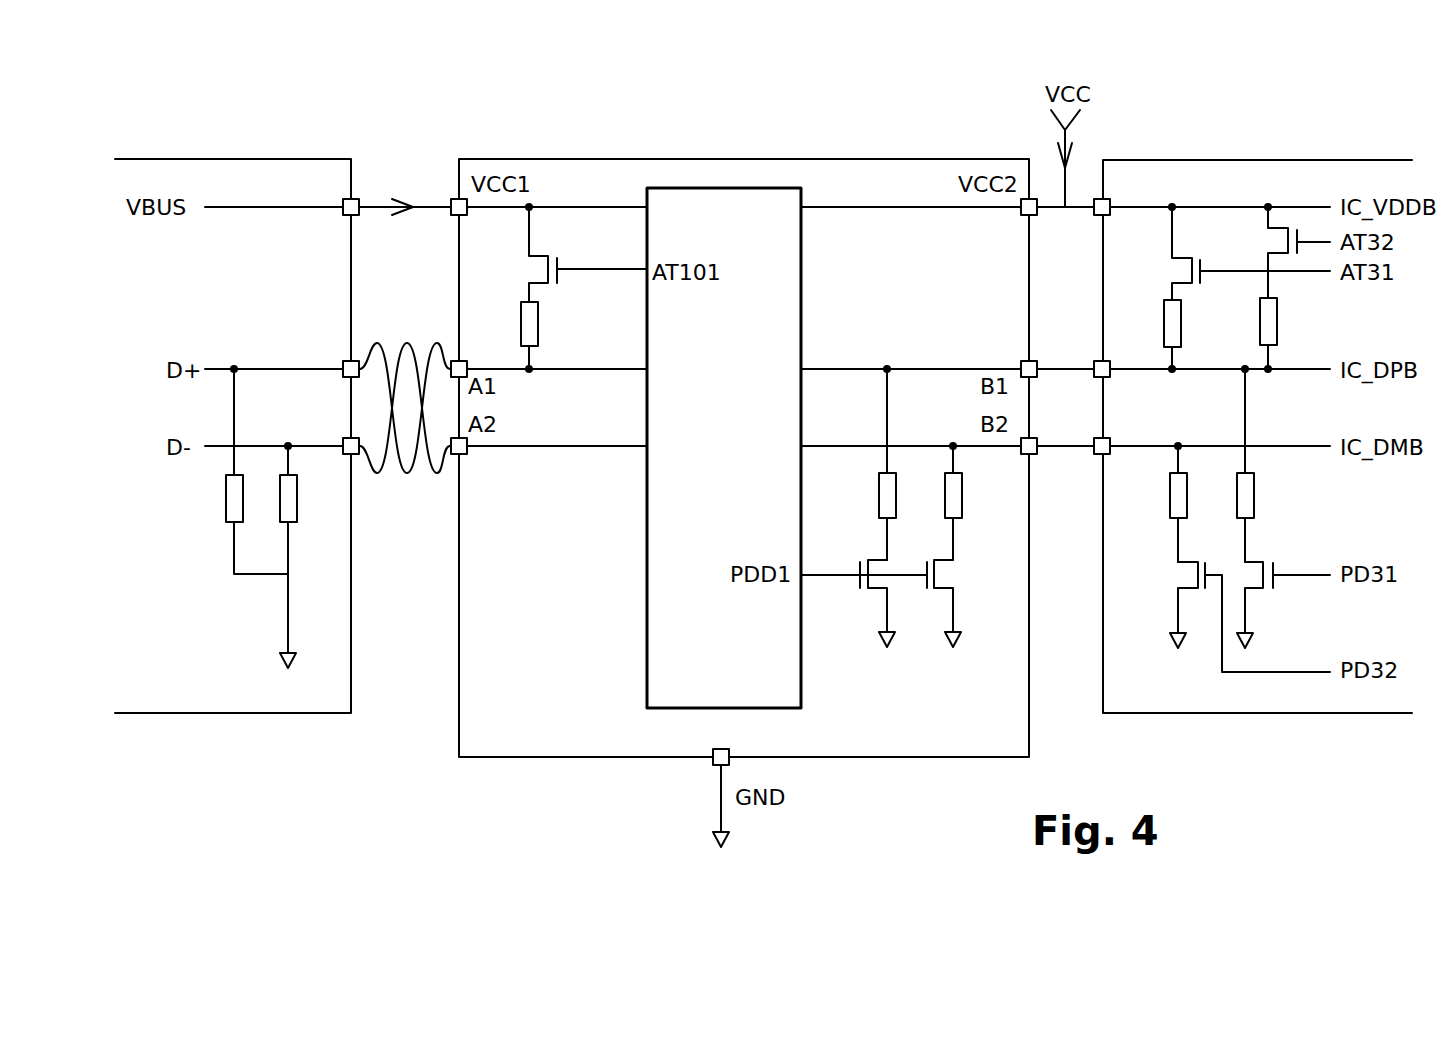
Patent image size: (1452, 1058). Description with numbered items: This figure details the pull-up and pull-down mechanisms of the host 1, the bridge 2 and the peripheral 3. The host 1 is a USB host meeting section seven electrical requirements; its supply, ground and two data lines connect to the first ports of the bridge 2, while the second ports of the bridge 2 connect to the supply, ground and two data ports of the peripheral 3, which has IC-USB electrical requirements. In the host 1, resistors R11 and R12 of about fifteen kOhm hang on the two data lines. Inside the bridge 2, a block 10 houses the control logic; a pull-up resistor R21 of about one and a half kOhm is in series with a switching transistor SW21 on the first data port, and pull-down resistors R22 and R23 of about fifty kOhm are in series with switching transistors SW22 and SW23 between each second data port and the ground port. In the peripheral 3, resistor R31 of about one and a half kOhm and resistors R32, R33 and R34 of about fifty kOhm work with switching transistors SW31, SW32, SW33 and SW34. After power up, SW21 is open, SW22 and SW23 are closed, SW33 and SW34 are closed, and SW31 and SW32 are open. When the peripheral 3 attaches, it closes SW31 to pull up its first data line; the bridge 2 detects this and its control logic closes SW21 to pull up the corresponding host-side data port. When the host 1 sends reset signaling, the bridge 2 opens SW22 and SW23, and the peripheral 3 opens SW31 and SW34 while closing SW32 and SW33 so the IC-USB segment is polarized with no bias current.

The host 1 is at (233, 436).
The bridge 2 is at (744, 458).
The peripheral 3 is at (1257, 436).
The control integrated circuit 10 is at (724, 448).
The resistor R11 is at (233, 471).
The resistor R12 is at (313, 557).
The pull-up resistor R21 is at (553, 335).
The switching transistor SW21 is at (556, 254).
The pull-down resistor R22 is at (862, 464).
The pull-down resistor R23 is at (977, 503).
The switching transistor SW22 is at (853, 603).
The switching transistor SW23 is at (974, 603).
The resistor R31 is at (1148, 334).
The resistor R32 is at (1243, 333).
The switching transistor SW31 is at (1219, 253).
The switching transistor SW32 is at (1265, 252).
The resistor R33 is at (1154, 504).
The resistor R34 is at (1271, 465).
The switching transistor SW33 is at (1222, 617).
The switching transistor SW34 is at (1283, 605).